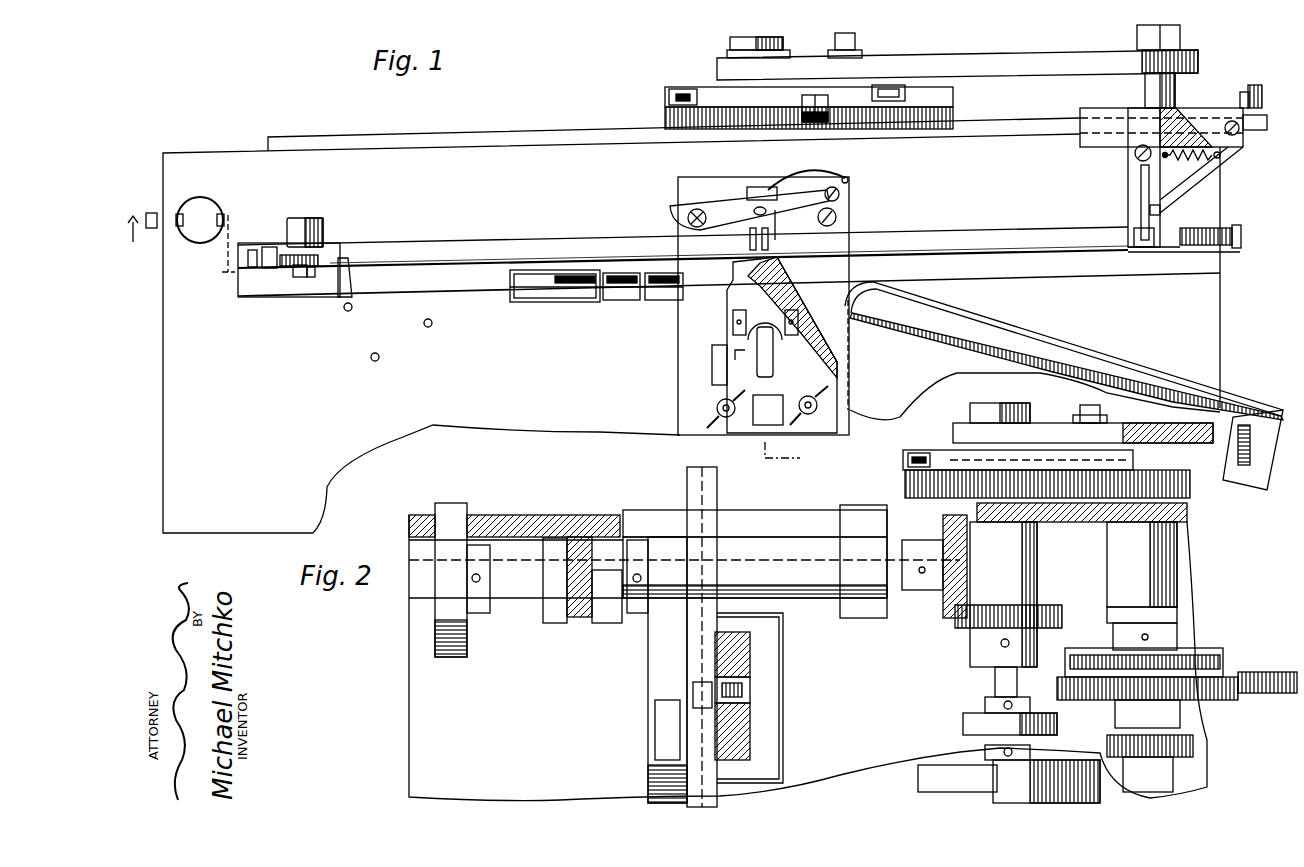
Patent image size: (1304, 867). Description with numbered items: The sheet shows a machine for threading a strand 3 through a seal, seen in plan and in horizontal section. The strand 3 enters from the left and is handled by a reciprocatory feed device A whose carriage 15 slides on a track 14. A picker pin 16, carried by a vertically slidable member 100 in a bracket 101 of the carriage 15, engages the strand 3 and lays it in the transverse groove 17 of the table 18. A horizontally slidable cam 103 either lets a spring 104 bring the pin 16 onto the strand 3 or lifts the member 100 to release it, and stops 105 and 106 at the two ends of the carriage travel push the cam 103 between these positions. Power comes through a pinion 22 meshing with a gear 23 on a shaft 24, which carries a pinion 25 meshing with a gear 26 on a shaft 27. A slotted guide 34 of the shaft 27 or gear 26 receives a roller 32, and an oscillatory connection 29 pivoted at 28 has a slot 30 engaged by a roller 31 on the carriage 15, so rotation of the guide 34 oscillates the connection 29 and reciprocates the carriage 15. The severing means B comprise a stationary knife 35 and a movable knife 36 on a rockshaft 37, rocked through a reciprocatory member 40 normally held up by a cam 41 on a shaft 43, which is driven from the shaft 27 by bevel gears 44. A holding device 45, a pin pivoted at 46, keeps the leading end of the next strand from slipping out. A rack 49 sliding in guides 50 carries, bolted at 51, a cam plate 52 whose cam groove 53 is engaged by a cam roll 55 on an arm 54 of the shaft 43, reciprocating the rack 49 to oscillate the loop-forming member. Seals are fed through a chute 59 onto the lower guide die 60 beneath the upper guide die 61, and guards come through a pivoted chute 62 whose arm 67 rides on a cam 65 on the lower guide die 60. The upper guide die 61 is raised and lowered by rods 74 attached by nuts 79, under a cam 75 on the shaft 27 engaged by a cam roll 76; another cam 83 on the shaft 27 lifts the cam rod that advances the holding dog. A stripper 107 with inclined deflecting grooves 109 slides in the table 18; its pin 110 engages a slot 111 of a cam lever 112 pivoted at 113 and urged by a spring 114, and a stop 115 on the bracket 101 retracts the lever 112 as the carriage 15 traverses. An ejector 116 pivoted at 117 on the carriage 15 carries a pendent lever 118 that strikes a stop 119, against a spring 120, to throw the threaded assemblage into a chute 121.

In FIG. 1, the strand 3 is at (1282, 477).
In FIG. 1, the track 14 is at (990, 138).
In FIG. 1, the carriage 15 is at (1086, 108).
In FIG. 1, the picker pin 16 is at (1151, 252).
In FIG. 1, the transverse groove 17 is at (452, 247).
In FIG. 1, the table 18 is at (484, 297).
In FIG. 2, the pinion 22 is at (1251, 696).
In FIG. 2, the gear 23 is at (1226, 672).
In FIG. 2, the shaft 24 is at (1190, 731).
In FIG. 1, the pinion 25 is at (945, 107).
In FIG. 2, the pinion 25 is at (1192, 494).
In FIG. 1, the gear 26 is at (723, 130).
In FIG. 2, the gear 26 is at (905, 489).
In FIG. 2, the shaft 27 is at (996, 681).
In FIG. 1, the pivot 28 is at (757, 38).
In FIG. 2, the pivot 28 is at (1023, 404).
In FIG. 1, the oscillatory connection 29 is at (940, 59).
In FIG. 2, the oscillatory connection 29 is at (1164, 444).
In FIG. 1, the slot 30 is at (1116, 50).
In FIG. 1, the roller 31 is at (1198, 56).
In FIG. 1, the roller 32 is at (860, 51).
In FIG. 2, the roller 32 is at (1076, 414).
In FIG. 1, the slotted guide 34 is at (809, 97).
In FIG. 2, the slotted guide 34 is at (928, 452).
In FIG. 1, the stationary knife 35 is at (342, 266).
In FIG. 1, the movable knife 36 is at (382, 326).
In FIG. 1, the rockshaft 37 is at (377, 311).
In FIG. 1, the reciprocatory member 40 is at (207, 208).
In FIG. 2, the rotating cam 41 is at (447, 657).
In FIG. 2, the shaft 43 is at (508, 566).
In FIG. 2, the bevel gears 44 is at (955, 627).
In FIG. 1, the holding device 45 is at (321, 273).
In FIG. 1, the pivot 46 is at (300, 277).
In FIG. 2, the reciprocatory rack 49 is at (740, 683).
In FIG. 2, the guides 50 is at (735, 656).
In FIG. 2, the bolted connection 51 is at (690, 699).
In FIG. 2, the cam plate 52 is at (695, 634).
In FIG. 2, the cam groove 53 is at (712, 615).
In FIG. 2, the arm 54 is at (660, 737).
In FIG. 2, the cam roll 55 is at (740, 761).
In FIG. 1, the chute 59 is at (641, 303).
In FIG. 1, the lower guide die 60 is at (836, 229).
In FIG. 1, the upper guide die 61 is at (811, 366).
In FIG. 1, the chute 62 is at (766, 316).
In FIG. 1, the cam 65 is at (712, 366).
In FIG. 1, the arm 67 is at (737, 359).
In FIG. 1, the rods 74 is at (718, 410).
In FIG. 2, the cam 75 is at (929, 775).
In FIG. 2, the cam roll 76 is at (995, 779).
In FIG. 1, the nuts 79 is at (734, 401).
In FIG. 2, the cam 83 is at (965, 716).
In FIG. 1, the vertically slidable member 100 is at (1141, 230).
In FIG. 1, the bracket 101 is at (1128, 182).
In FIG. 1, the horizontally slidable cam 103 is at (1132, 240).
In FIG. 1, the spring 104 is at (1138, 170).
In FIG. 1, the stop 105 is at (290, 271).
In FIG. 1, the stop 106 is at (1201, 247).
In FIG. 1, the stripper 107 is at (776, 230).
In FIG. 1, the inclined deflecting grooves 109 is at (752, 241).
In FIG. 1, the pin 110 is at (736, 210).
In FIG. 1, the slot 111 is at (771, 190).
In FIG. 1, the cam lever 112 is at (800, 186).
In FIG. 1, the pivot 113 is at (840, 196).
In FIG. 1, the spring 114 is at (821, 169).
In FIG. 1, the stop 115 is at (1167, 208).
In FIG. 1, the ejector member 116 is at (1240, 151).
In FIG. 1, the pivot 117 is at (1240, 127).
In FIG. 1, the pendent lever 118 is at (1252, 100).
In FIG. 1, the stop 119 is at (812, 95).
In FIG. 1, the spring 120 is at (1186, 160).
In FIG. 1, the chute 121 is at (1064, 386).
In FIG. 1, the reciprocatory feed device A is at (1039, 38).
In FIG. 1, the severing means B is at (380, 332).